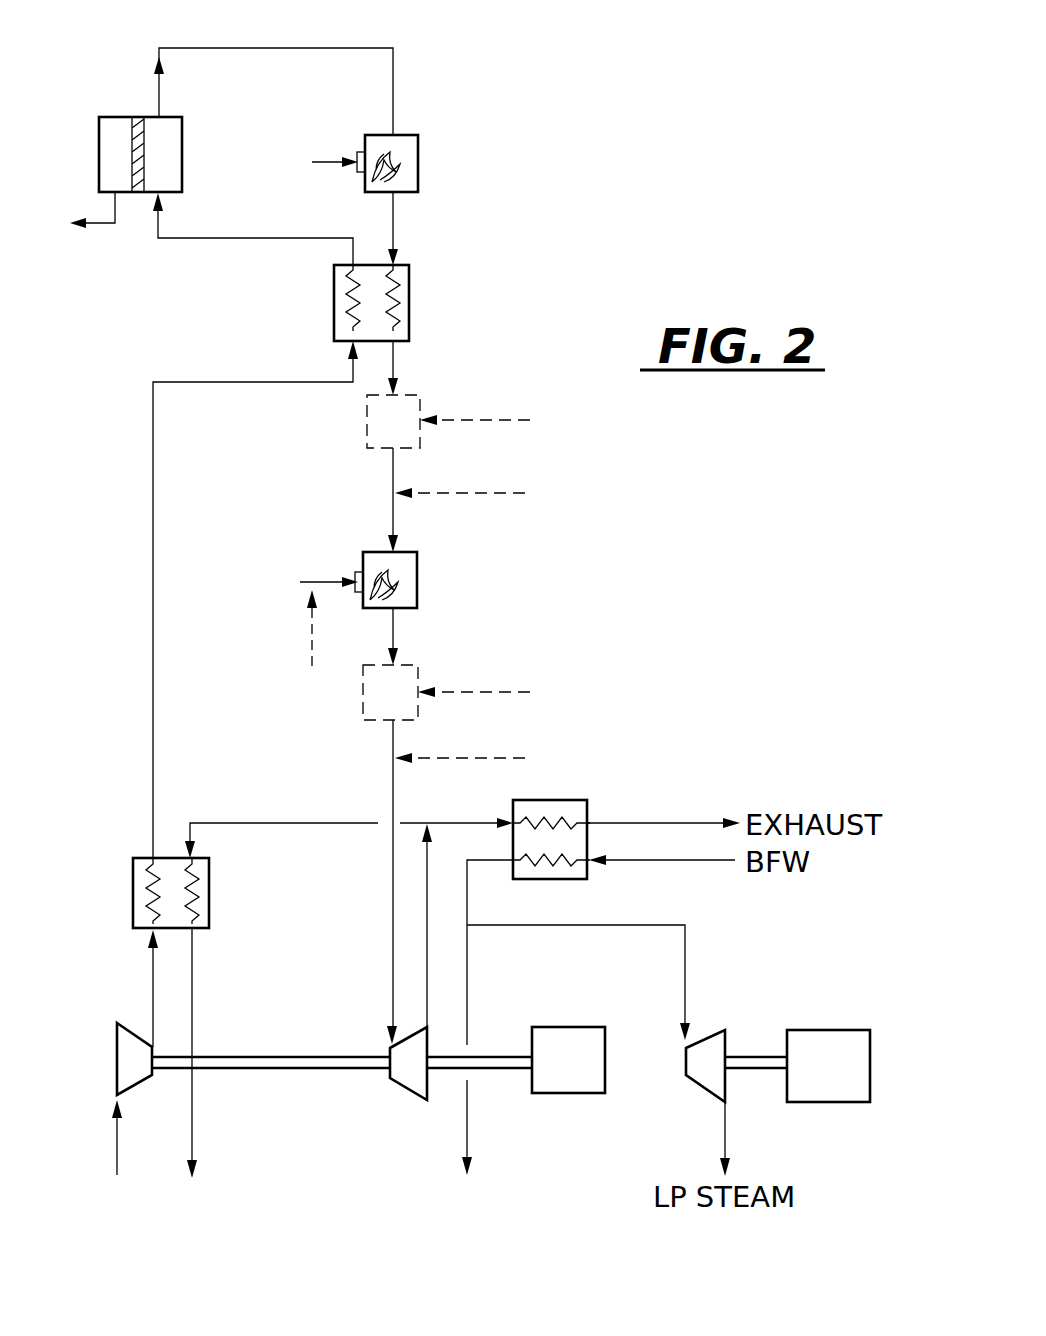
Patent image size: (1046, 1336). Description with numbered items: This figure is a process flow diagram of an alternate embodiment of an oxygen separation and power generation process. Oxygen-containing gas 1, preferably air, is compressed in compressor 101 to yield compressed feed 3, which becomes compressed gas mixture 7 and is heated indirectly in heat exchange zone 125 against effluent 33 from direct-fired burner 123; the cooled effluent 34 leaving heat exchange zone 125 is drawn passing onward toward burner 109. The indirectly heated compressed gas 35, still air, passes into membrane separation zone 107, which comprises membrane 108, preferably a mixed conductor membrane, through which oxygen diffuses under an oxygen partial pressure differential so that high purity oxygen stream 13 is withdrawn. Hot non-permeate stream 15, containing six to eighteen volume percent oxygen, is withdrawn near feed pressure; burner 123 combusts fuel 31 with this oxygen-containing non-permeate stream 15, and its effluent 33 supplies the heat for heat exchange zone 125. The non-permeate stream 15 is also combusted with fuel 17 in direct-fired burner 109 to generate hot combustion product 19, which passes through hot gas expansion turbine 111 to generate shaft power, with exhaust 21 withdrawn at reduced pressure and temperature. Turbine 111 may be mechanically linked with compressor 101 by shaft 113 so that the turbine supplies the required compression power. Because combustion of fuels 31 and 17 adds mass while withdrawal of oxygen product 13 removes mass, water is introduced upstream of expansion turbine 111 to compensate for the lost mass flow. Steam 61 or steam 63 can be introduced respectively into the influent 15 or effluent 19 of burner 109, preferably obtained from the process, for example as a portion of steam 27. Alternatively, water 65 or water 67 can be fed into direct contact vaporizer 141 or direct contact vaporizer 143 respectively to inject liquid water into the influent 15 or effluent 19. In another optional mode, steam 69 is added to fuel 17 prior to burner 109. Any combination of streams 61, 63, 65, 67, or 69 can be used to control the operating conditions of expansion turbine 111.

The oxygen-containing gas 1 is at (115, 1135).
The compressed feed 3 is at (150, 986).
The compressed gas mixture 7 is at (216, 382).
The oxygen stream 13 is at (102, 230).
The non-permeate stream 15 is at (320, 48).
The fuel 17 is at (316, 580).
The hot combustion product 19 is at (388, 929).
The exhaust 21 is at (428, 912).
The steam 27 is at (467, 985).
The fuel 31 is at (314, 160).
The effluent 33 is at (395, 238).
The cooled gas line from heat exchanger 34 is at (397, 365).
The indirectly heated compressed gas 35 is at (245, 240).
The steam 61 is at (470, 493).
The steam 63 is at (486, 758).
The water 65 is at (490, 420).
The water 67 is at (490, 690).
The steam 69 is at (310, 640).
The compressor 101 is at (115, 1045).
The membrane separation zone 107 is at (182, 117).
The membrane 108 is at (131, 133).
The direct-fired burner 109 is at (417, 580).
The hot gas expansion turbine 111 is at (385, 1095).
The shaft 113 is at (318, 1055).
The direct-fired burner 123 is at (410, 135).
The heat exchange zone 125 is at (410, 288).
The direct contact vaporizer 141 is at (367, 423).
The direct contact vaporizer 143 is at (363, 705).